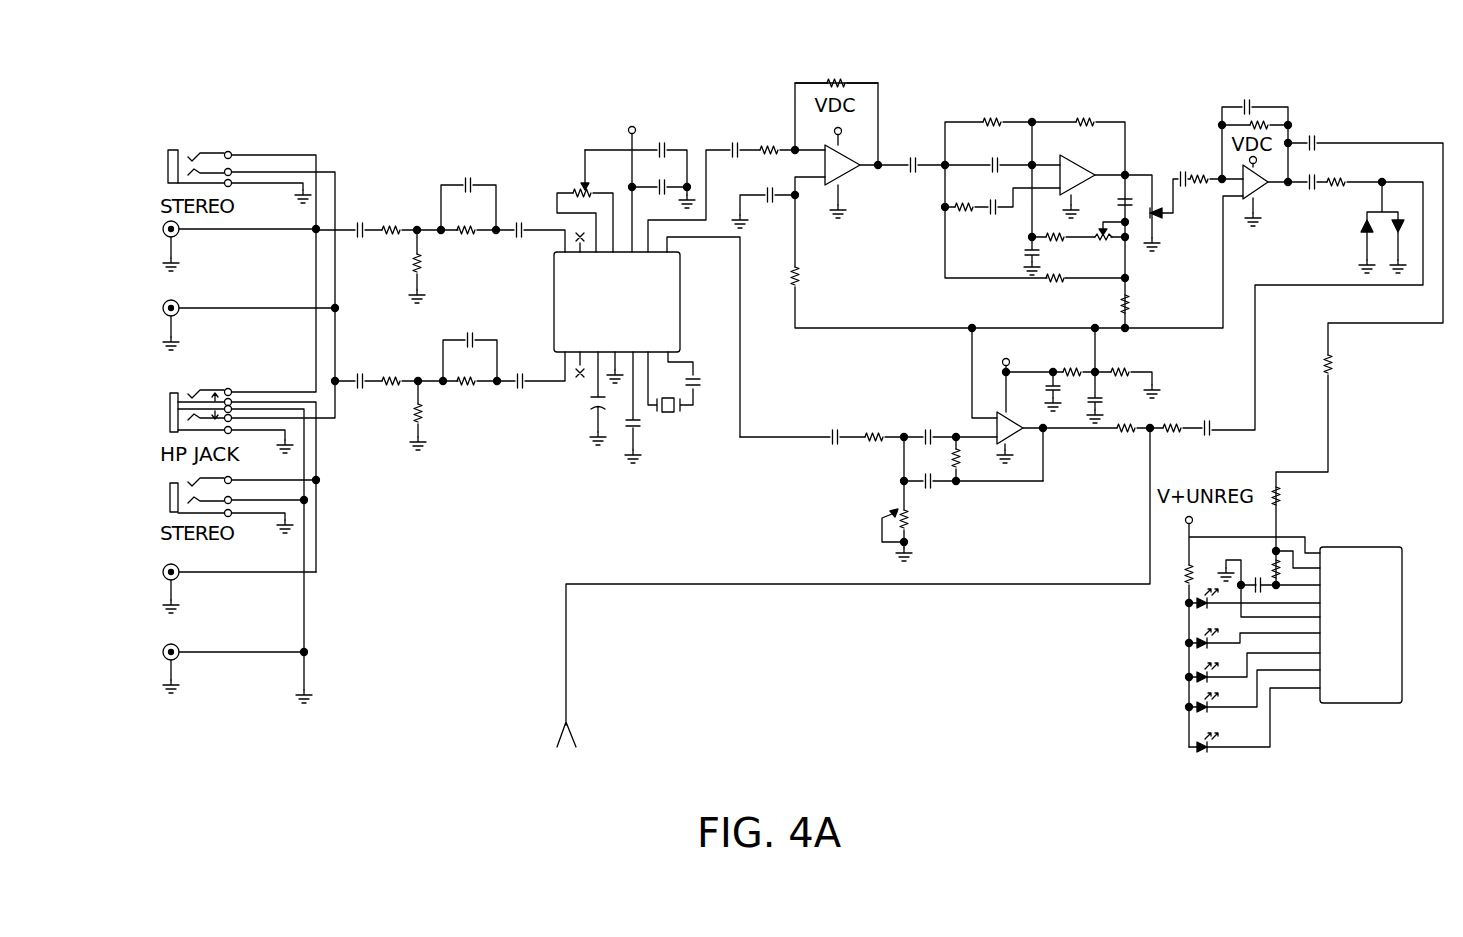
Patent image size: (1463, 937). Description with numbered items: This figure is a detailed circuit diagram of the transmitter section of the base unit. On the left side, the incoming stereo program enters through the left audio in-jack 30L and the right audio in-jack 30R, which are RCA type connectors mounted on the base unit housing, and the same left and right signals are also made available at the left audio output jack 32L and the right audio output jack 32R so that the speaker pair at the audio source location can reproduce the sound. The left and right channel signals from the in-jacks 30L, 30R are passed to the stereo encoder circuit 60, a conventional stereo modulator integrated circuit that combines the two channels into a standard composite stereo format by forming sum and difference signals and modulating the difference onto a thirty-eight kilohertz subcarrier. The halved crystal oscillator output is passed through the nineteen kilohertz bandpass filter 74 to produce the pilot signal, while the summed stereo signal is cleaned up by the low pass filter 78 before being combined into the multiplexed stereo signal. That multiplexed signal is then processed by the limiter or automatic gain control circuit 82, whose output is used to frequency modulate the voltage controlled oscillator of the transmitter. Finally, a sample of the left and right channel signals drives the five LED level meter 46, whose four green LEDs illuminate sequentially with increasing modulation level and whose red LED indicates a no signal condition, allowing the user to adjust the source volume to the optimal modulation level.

The left audio in-jack 30L is at (188, 265).
The right audio in-jack 30R is at (195, 340).
The left audio output jack 32L is at (195, 612).
The right audio output jack 32R is at (204, 698).
The stereo encoder circuit 60 is at (666, 433).
The 19 KHz bandpass filter 74 is at (1006, 489).
The low pass filter 78 is at (952, 281).
The limiter or automatic gain control circuit 82 is at (1390, 205).
The five LED level meter 46 is at (1357, 556).